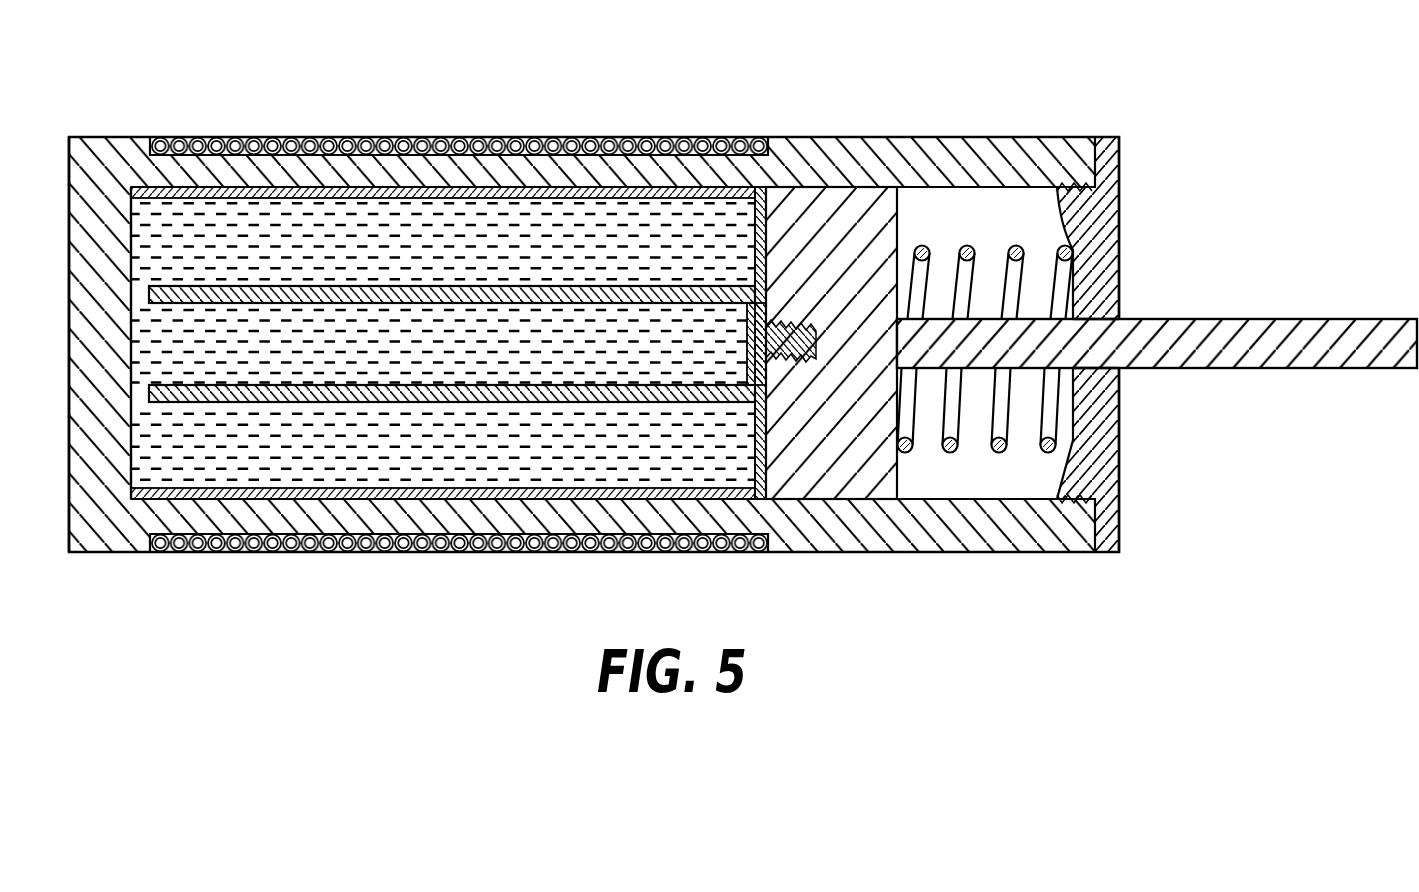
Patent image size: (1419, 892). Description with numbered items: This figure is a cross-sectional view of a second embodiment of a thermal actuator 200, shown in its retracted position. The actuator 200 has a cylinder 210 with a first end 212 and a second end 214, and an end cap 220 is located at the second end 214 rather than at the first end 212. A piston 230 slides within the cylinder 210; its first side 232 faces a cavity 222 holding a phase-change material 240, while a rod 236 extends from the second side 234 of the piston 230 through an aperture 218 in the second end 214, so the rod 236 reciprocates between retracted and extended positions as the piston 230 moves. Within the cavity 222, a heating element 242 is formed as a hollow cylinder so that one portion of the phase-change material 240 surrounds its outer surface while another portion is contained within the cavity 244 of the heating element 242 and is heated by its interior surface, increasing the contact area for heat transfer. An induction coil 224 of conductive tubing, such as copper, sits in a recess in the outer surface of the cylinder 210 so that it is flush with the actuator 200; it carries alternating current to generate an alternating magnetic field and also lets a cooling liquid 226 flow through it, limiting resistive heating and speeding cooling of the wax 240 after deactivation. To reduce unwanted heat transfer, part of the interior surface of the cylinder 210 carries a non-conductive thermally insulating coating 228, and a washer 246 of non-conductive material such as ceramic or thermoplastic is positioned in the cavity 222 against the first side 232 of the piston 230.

The actuator 200 is at (1178, 95).
The cylinder 210 is at (880, 552).
The first end 212 is at (80, 137).
The second end 214 is at (1040, 137).
The aperture 218 is at (1096, 319).
The end cap 220 is at (1119, 205).
The cavity 222 is at (428, 466).
The induction coil 224 is at (568, 127).
The cooling liquid 226 is at (347, 543).
The thermally insulating coating 228 is at (443, 337).
The piston 230 is at (840, 215).
The first side 232 is at (722, 187).
The second side 234 is at (900, 199).
The rod 236 is at (1316, 319).
The phase-change material 240 is at (373, 213).
The heating element 242 is at (443, 282).
The cavity of the heating element 244 is at (343, 325).
The washer 246 is at (752, 248).